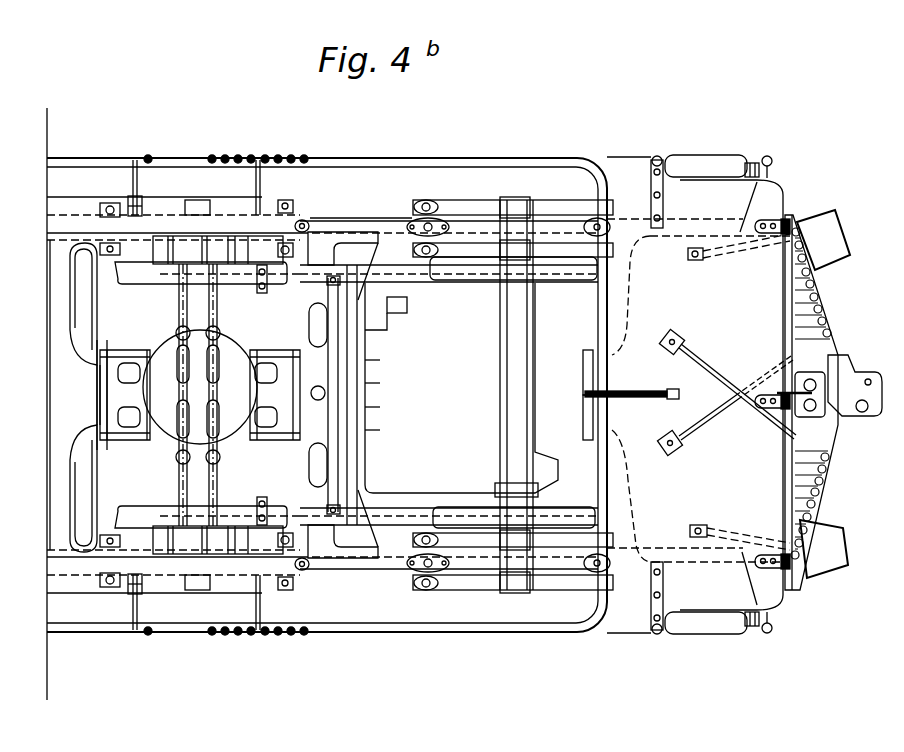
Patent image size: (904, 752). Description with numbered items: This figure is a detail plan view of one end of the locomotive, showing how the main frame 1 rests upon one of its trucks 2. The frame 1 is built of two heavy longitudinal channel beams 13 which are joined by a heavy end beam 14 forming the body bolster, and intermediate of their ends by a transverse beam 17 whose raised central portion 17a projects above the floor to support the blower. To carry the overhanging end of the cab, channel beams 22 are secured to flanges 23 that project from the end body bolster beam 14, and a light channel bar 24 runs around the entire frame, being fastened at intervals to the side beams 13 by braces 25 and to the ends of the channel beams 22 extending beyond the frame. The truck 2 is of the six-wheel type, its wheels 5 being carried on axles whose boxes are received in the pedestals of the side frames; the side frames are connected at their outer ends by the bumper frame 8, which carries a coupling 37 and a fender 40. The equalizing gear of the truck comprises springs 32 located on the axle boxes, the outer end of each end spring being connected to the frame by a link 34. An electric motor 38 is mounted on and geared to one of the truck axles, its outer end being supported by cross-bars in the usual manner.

The frame 1 is at (42, 262).
The truck 2 is at (692, 153).
The wheel 5 is at (132, 280).
The bumper frame 8 is at (698, 393).
The longitudinal channel beam 13 is at (80, 598).
The end beam 14 is at (200, 387).
The transverse beam 17 is at (57, 328).
The raised central portion 17a is at (95, 363).
The channel beam 22 is at (403, 272).
The flange 23 is at (266, 284).
The light channel bar 24 is at (480, 162).
The brace 25 is at (262, 186).
The spring 32 is at (296, 207).
The link 34 is at (308, 227).
The coupling 37 is at (872, 373).
The electric motor 38 is at (461, 388).
The fender 40 is at (828, 474).